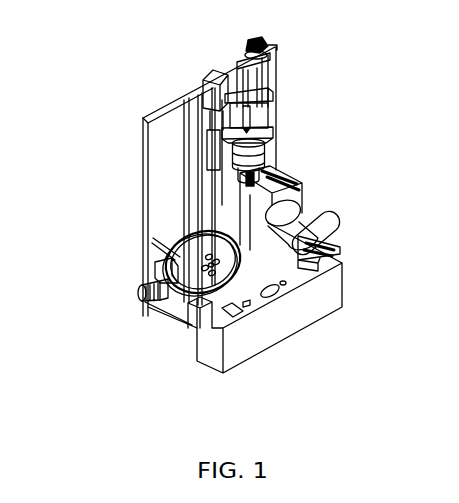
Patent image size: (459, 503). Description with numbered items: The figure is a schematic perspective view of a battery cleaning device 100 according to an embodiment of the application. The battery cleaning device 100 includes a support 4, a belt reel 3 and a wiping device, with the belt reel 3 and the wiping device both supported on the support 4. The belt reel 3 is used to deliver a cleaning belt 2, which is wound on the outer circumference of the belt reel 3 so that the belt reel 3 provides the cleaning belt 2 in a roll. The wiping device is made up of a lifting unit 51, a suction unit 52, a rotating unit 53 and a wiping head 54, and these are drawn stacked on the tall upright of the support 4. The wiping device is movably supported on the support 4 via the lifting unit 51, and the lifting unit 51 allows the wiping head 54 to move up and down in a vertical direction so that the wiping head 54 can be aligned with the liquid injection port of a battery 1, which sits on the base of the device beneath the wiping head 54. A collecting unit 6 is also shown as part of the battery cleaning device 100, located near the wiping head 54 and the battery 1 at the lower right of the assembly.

The battery cleaning device 100 is at (112, 54).
The battery 1 is at (215, 358).
The cleaning belt 2 is at (148, 302).
The belt reel 3 is at (150, 283).
The support 4 is at (158, 205).
The lifting unit 51 is at (210, 165).
The suction unit 52 is at (250, 88).
The rotating unit 53 is at (250, 160).
The wiping head 54 is at (273, 176).
The collecting unit 6 is at (283, 213).